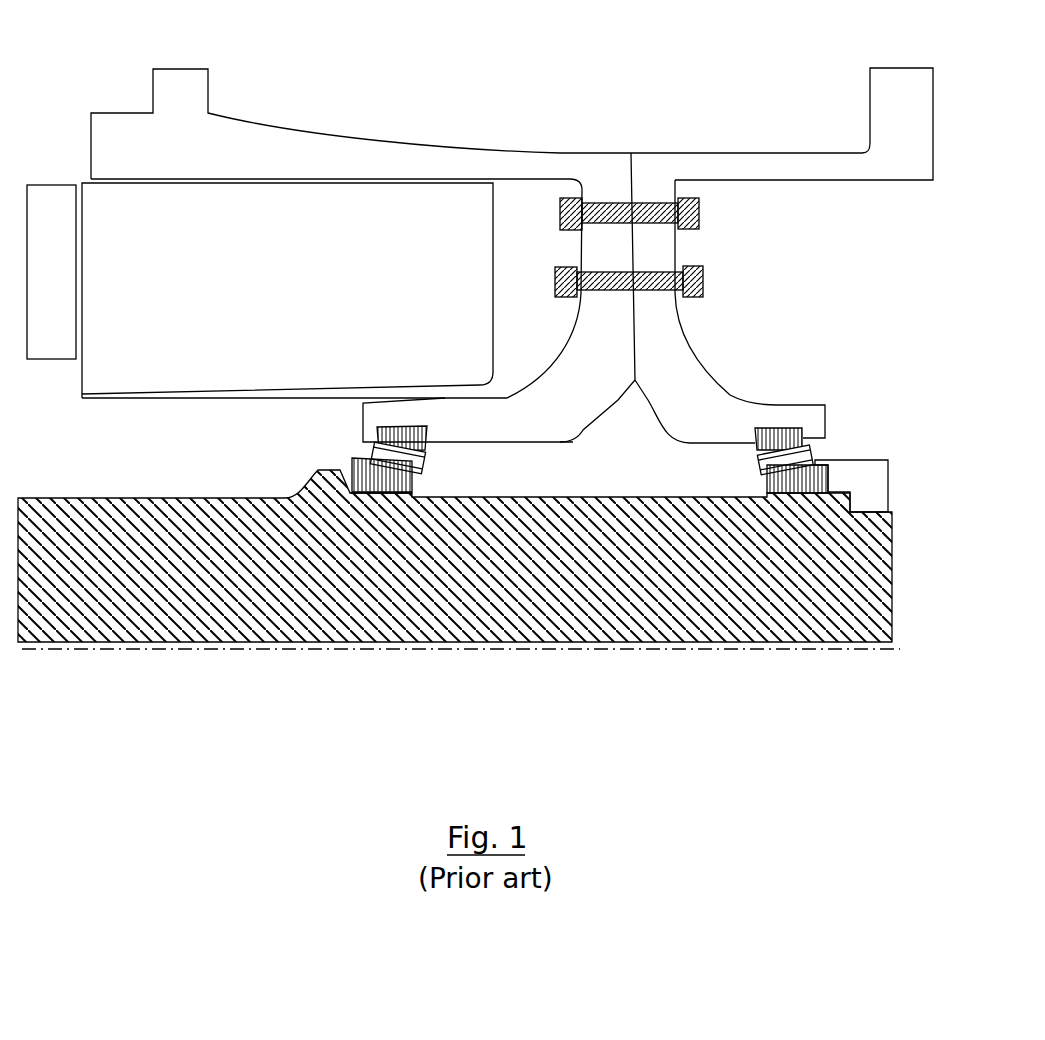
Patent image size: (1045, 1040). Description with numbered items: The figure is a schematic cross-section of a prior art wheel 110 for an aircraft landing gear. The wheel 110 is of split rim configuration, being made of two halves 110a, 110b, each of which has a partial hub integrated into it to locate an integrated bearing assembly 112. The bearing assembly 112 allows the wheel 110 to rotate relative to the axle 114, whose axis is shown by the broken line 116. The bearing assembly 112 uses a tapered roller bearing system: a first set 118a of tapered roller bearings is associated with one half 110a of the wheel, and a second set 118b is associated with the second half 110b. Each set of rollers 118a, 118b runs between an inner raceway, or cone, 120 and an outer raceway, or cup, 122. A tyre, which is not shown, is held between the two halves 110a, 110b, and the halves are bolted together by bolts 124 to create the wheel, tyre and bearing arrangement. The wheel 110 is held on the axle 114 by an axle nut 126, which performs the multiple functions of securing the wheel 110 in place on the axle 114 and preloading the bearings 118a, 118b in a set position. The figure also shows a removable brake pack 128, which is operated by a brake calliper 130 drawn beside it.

The wheel 110 is at (648, 102).
The first half of the wheel 110a is at (218, 152).
The second half of the wheel 110b is at (922, 173).
The bearing assembly 112 is at (745, 318).
The axle 114 is at (186, 612).
The axis 116 is at (543, 652).
The first set of tapered roller bearings 118a is at (370, 453).
The second set of tapered roller bearings 118b is at (768, 470).
The inner raceway 120 is at (414, 481).
The outer raceway 122 is at (406, 428).
The bolts 124 is at (700, 229).
The axle nut 126 is at (878, 468).
The removable brake pack 128 is at (253, 303).
The brake calliper 130 is at (45, 330).